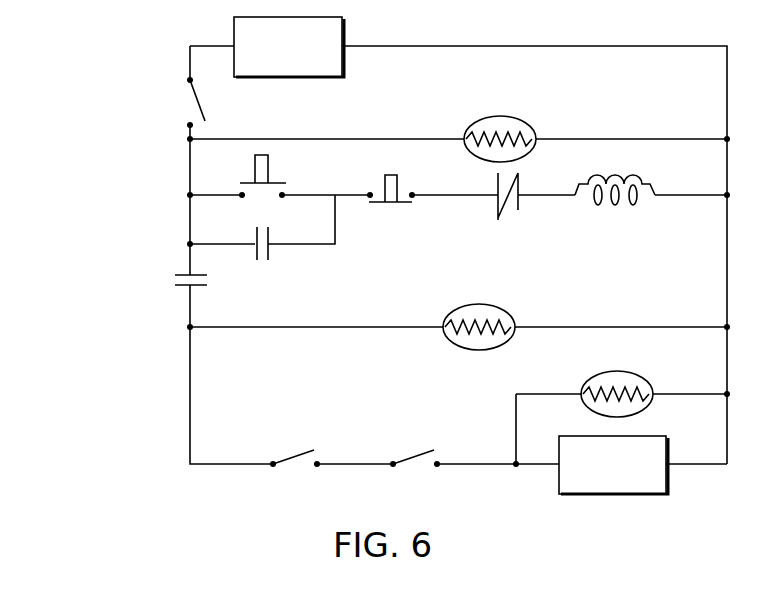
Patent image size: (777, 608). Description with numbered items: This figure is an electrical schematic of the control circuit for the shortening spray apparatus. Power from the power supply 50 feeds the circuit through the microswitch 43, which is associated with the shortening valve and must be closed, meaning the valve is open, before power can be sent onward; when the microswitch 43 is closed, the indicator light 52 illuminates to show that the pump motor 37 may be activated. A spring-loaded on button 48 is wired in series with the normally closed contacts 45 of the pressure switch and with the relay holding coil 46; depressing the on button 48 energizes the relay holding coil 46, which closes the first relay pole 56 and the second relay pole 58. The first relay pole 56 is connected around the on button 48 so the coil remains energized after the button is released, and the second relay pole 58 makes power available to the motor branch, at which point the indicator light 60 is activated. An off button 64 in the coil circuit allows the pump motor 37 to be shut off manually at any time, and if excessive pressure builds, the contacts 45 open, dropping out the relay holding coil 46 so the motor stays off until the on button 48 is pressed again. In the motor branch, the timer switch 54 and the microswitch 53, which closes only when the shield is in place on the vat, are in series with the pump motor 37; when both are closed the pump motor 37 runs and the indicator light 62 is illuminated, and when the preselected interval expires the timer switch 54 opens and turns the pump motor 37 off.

The power supply 50 is at (343, 30).
The microswitch 43 is at (194, 98).
The indicator light 52 is at (535, 126).
The on button 48 is at (255, 170).
The off button 64 is at (398, 184).
The contacts 45 is at (518, 210).
The relay holding coil 46 is at (629, 183).
The first relay pole 56 is at (270, 243).
The second relay pole 58 is at (186, 288).
The indicator light 60 is at (512, 313).
The indicator light 62 is at (650, 380).
The pump motor 37 is at (616, 494).
The timer switch 54 is at (298, 452).
The microswitch 53 is at (418, 452).